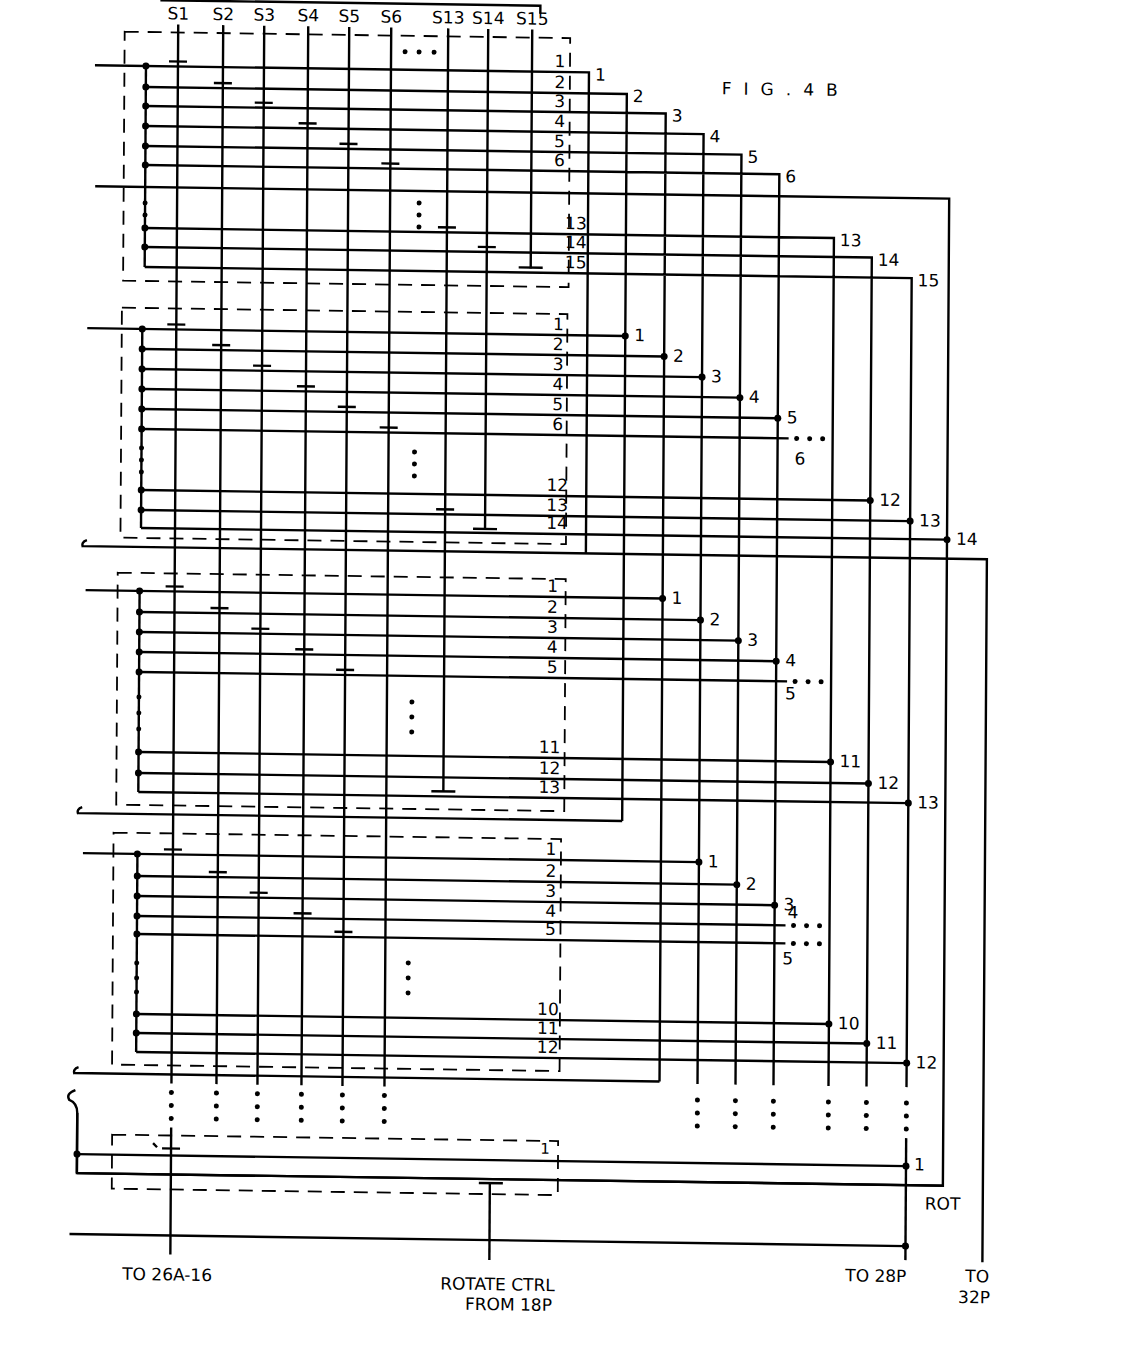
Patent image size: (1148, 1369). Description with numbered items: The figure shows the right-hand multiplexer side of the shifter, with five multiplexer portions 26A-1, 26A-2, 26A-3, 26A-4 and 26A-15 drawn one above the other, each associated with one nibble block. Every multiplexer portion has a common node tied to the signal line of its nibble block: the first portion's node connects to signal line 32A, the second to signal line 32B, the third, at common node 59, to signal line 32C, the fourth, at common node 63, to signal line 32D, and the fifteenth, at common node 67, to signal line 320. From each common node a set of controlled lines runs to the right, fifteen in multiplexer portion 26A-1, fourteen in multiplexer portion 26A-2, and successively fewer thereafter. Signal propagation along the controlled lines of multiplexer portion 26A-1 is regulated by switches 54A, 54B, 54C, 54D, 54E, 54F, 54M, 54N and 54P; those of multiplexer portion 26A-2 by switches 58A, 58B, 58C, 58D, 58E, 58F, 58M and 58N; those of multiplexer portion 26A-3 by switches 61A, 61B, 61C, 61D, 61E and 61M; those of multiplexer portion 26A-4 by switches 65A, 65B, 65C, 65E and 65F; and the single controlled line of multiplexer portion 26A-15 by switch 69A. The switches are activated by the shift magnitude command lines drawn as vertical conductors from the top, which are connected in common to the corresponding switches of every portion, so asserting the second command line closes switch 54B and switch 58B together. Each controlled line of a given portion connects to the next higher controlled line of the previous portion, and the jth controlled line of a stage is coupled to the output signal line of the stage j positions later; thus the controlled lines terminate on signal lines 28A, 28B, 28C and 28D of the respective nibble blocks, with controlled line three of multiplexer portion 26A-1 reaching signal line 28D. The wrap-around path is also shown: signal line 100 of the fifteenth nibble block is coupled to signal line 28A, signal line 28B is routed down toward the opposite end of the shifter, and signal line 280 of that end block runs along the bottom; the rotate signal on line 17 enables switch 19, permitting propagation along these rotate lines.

The multiplexer portion 26A-1 is at (572, 38).
The multiplexer portion 26A-2 is at (120, 454).
The multiplexer portion 26A-3 is at (118, 719).
The multiplexer portion 26A-4 is at (116, 979).
The multiplexer portion 26A-15 is at (155, 1193).
The signal line 32A is at (110, 59).
The signal line 32B is at (103, 323).
The signal line 32C is at (103, 585).
The signal line 32D is at (103, 848).
The signal line 28A is at (103, 187).
The signal line 28B is at (529, 886).
The signal line 28C is at (347, 802).
The signal line 28D is at (365, 1062).
The switch 54A is at (195, 50).
The switch 54B is at (208, 79).
The switch 54C is at (250, 98).
The switch 54D is at (292, 119).
The switch 54E is at (334, 139).
The switch 54F is at (404, 159).
The switch 54M is at (462, 223).
The switch 54N is at (504, 243).
The switch 54P is at (547, 263).
The switch 58A is at (193, 320).
The switch 58B is at (235, 341).
The switch 58C is at (277, 362).
The switch 58D is at (321, 382).
The switch 58E is at (361, 403).
The switch 58F is at (402, 423).
The switch 58M is at (461, 505).
The switch 58N is at (502, 524).
The switch 61A is at (191, 582).
The switch 61B is at (232, 604).
The switch 61C is at (274, 625).
The switch 61D is at (318, 645).
The switch 61E is at (358, 666).
The switch 61M is at (461, 787).
The switch 65A is at (188, 845).
The switch 65B is at (230, 868).
The switch 65C is at (272, 889).
The switch 65E is at (315, 909).
The switch 65F is at (355, 928).
The switch 69A is at (112, 1139).
The common node 59 is at (140, 588).
The common node 63 is at (135, 848).
The common node 67 is at (86, 1152).
The signal line 320 is at (93, 1127).
The signal line 100 is at (617, 1178).
The signal line 280 is at (100, 1237).
The rotate signal line 17 is at (499, 1247).
The switch 19 is at (490, 1186).